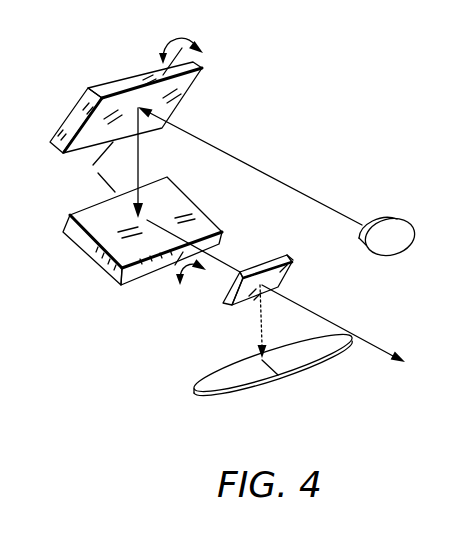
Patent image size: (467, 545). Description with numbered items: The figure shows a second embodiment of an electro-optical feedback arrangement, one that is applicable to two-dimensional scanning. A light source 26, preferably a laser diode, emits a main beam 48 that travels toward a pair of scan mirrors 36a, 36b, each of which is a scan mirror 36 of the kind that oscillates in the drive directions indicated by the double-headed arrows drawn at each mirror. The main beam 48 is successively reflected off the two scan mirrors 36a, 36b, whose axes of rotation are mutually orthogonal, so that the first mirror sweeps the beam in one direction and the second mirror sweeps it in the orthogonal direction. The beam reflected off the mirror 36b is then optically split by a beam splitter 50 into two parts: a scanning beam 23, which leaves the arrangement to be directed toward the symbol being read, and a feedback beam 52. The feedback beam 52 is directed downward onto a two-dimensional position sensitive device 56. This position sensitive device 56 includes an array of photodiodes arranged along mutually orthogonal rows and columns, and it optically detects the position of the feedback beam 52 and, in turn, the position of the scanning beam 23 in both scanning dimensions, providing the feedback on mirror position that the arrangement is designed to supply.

The scan mirror 36a is at (83, 98).
The scan mirror 36b is at (83, 213).
The scan mirror 36 is at (456, 186).
The main beam 48 is at (255, 168).
The beam splitter 50 is at (277, 258).
The feedback beam 52 is at (258, 318).
The scanning beam 23 is at (362, 337).
The light source 26 is at (408, 243).
The two-dimensional position sensitive device 56 is at (245, 390).